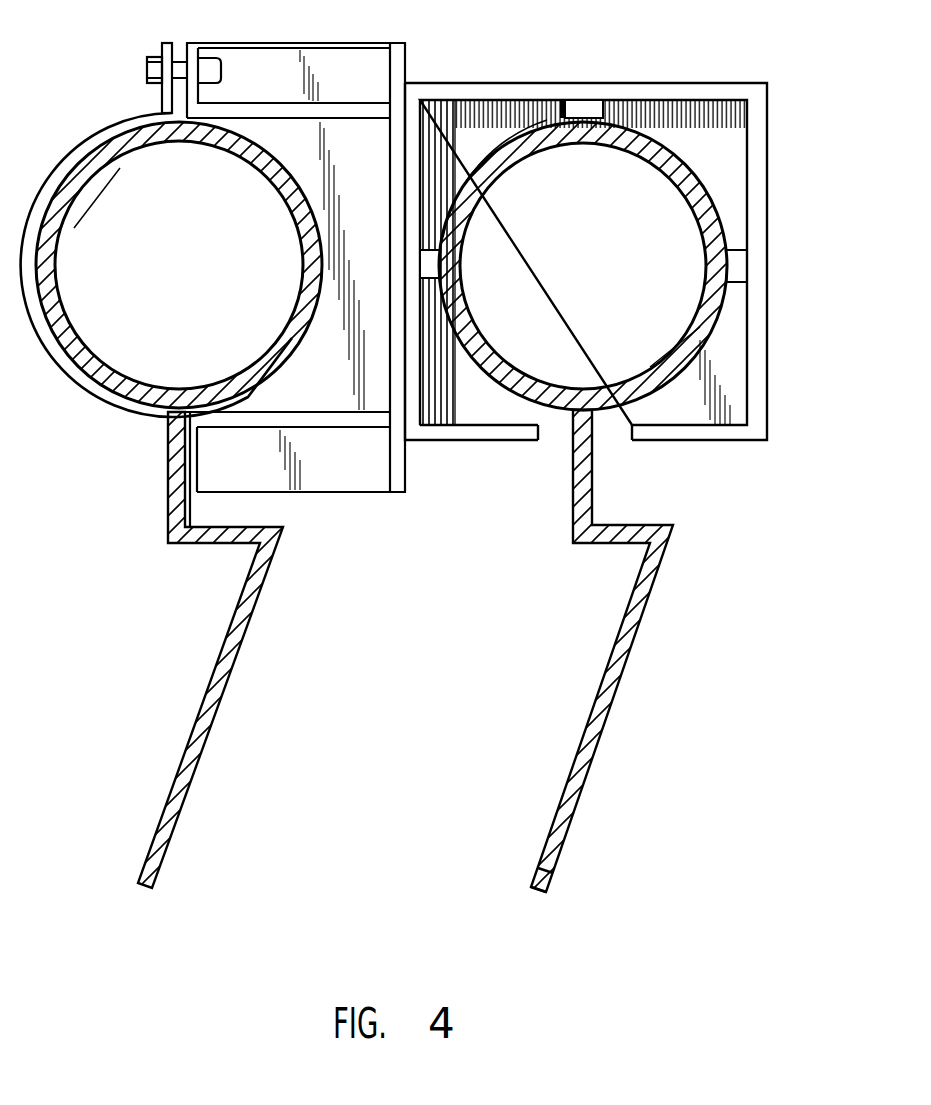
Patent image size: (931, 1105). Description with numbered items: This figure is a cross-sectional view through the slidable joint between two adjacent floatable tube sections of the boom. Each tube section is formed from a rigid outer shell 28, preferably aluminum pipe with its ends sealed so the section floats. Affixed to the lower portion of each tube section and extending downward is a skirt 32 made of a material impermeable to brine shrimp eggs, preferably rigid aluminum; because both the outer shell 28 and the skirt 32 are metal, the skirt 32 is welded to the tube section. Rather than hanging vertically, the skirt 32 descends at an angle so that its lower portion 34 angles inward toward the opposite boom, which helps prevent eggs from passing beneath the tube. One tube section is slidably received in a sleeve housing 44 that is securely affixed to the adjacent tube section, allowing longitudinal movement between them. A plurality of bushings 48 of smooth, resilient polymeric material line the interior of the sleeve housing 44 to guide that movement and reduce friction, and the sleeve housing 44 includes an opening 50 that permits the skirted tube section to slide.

The outer shell 28 is at (700, 327).
The skirt 32 is at (620, 685).
The lower portion 34 is at (538, 850).
The sleeve housing 44 is at (767, 167).
The bushings 48 is at (485, 135).
The slot 50 is at (540, 428).